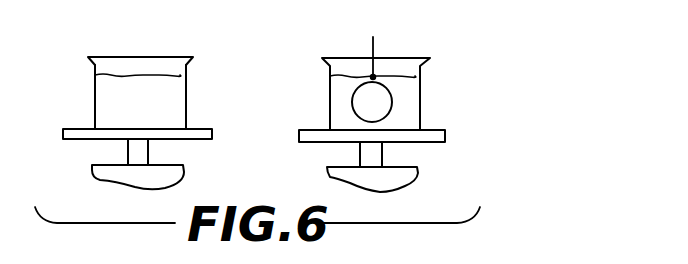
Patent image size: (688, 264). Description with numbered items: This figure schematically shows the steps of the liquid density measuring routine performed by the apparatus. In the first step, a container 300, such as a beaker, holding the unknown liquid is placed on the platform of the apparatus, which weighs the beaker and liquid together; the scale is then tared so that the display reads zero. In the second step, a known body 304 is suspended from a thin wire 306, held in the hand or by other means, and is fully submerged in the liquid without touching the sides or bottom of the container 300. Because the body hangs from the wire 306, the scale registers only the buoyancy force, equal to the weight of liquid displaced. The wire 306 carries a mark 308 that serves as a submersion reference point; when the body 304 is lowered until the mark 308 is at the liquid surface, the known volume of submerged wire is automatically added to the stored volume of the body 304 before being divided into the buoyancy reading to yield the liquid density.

The container 300 is at (183, 65).
The known body 304 is at (390, 100).
The thin wire 306 is at (375, 43).
The mark 308 is at (375, 76).